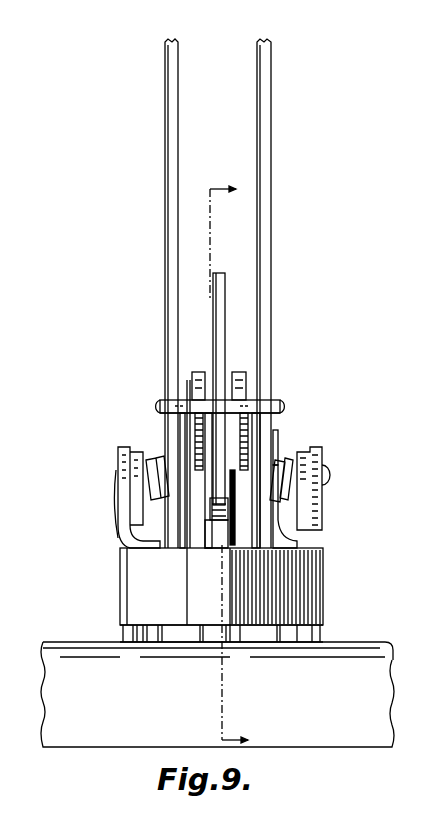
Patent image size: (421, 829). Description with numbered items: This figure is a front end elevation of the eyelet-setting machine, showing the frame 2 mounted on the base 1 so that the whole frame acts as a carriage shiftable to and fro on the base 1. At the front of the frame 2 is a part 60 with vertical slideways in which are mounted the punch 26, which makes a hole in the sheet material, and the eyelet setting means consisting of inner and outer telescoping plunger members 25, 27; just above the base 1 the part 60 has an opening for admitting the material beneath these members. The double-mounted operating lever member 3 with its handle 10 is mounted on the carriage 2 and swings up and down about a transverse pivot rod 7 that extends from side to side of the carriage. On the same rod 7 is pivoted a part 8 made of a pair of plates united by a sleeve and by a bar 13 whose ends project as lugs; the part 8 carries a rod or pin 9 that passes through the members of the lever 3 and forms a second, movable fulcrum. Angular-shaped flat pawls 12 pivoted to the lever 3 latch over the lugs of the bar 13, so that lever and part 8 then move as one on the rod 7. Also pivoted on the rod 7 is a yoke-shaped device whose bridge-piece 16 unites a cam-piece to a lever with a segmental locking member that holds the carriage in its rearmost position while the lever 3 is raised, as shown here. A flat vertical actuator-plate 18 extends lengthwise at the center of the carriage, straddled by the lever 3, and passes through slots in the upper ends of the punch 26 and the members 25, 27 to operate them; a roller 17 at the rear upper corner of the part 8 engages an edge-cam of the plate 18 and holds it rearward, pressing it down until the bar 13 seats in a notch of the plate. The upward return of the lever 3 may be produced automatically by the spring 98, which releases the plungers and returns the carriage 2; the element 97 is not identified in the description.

The base 1 is at (68, 696).
The frame 2 is at (135, 583).
The operating lever member 3 is at (263, 136).
The transverse pivot rod 7 is at (328, 474).
The part 8 is at (191, 392).
The rod or pin 9 is at (157, 402).
The handle 10 is at (241, 459).
The angular-shaped flat pawls 12 is at (172, 440).
The bar 13 is at (285, 408).
The bridge-piece 16 is at (137, 497).
The roller 17 is at (230, 378).
The actuator-plate 18 is at (218, 273).
The inner telescoping plunger member 25 is at (247, 460).
The punch 26 is at (213, 531).
The outer telescoping plunger member 27 is at (200, 508).
The part 60 is at (210, 564).
The rack bar 97 is at (190, 475).
The spring 98 is at (192, 465).